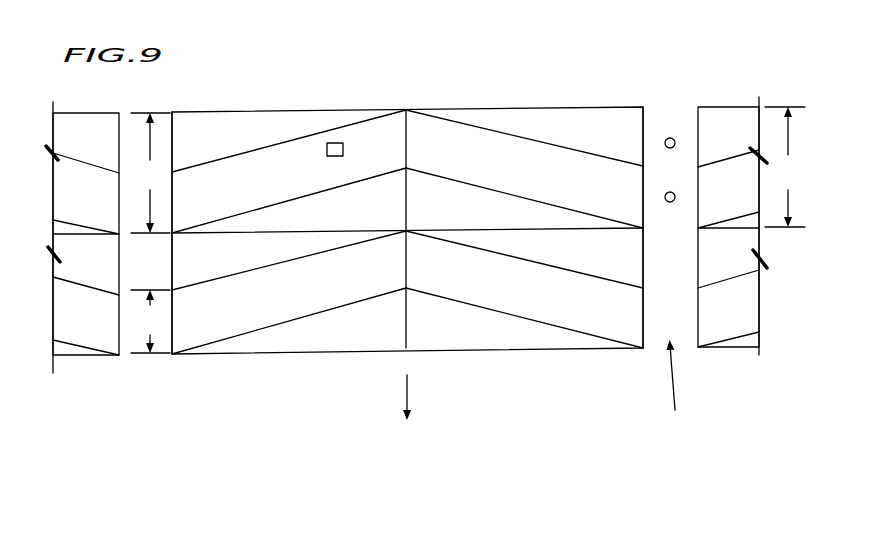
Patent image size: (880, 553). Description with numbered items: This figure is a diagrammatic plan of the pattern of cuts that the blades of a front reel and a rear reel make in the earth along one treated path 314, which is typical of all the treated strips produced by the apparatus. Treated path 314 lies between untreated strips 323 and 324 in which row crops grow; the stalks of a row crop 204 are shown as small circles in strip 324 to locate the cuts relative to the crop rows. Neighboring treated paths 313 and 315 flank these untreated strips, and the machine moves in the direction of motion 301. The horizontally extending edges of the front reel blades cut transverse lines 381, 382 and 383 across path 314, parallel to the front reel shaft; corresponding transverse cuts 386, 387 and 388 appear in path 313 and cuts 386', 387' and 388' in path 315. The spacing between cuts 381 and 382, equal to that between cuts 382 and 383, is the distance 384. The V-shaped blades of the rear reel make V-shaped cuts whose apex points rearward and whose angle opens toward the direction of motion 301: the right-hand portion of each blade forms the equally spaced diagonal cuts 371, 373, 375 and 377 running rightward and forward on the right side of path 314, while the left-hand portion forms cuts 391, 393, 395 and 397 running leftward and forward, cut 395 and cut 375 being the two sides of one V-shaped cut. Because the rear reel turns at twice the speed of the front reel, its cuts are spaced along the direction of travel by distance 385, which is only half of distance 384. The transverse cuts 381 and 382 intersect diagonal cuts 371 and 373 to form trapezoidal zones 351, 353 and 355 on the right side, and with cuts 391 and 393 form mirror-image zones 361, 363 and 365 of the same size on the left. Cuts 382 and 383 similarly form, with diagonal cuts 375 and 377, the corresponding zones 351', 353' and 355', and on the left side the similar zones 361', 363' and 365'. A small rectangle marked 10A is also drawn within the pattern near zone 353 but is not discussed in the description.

The detail region 10A is at (333, 143).
The row crop 204 is at (673, 138).
The direction of motion 301 is at (428, 395).
The treated path 313 is at (703, 388).
The treated path 314 is at (647, 475).
The treated path 315 is at (115, 392).
The untreated strip 323 is at (681, 392).
The untreated strip 324 is at (120, 362).
The trapezoidal zone 351 is at (173, 221).
The trapezoidal zone 351' is at (153, 263).
The trapezoidal zone 353 is at (289, 202).
The trapezoidal zone 353' is at (289, 273).
The trapezoidal zone 355 is at (289, 200).
The trapezoidal zone 355' is at (289, 321).
The trapezoidal zone 361 is at (625, 208).
The trapezoidal zone 361' is at (658, 258).
The trapezoidal zone 363 is at (524, 169).
The trapezoidal zone 363' is at (524, 271).
The trapezoidal zone 365 is at (524, 199).
The trapezoidal zone 365' is at (524, 319).
The diagonal cut 371 is at (224, 158).
The diagonal cut 373 is at (312, 194).
The diagonal cut 375 is at (347, 247).
The diagonal cut 377 is at (280, 327).
The transverse cut 381 is at (433, 109).
The transverse cut 382 is at (527, 232).
The transverse cut 383 is at (452, 353).
The distance between cuts 384 is at (468, 170).
The distance between cuts 385 is at (150, 321).
The transverse cut 386 is at (574, 89).
The transverse cut 386' is at (86, 101).
The transverse cut 387 is at (753, 240).
The transverse cut 387' is at (86, 248).
The transverse cut 388 is at (728, 362).
The transverse cut 388' is at (86, 371).
The diagonal cut 391 is at (592, 150).
The diagonal cut 393 is at (467, 185).
The diagonal cut 395 is at (440, 238).
The diagonal cut 397 is at (512, 317).